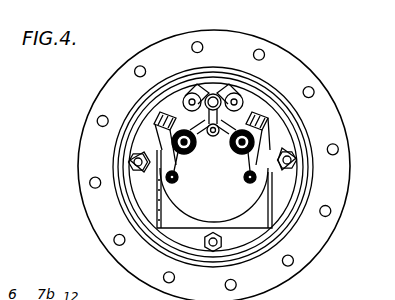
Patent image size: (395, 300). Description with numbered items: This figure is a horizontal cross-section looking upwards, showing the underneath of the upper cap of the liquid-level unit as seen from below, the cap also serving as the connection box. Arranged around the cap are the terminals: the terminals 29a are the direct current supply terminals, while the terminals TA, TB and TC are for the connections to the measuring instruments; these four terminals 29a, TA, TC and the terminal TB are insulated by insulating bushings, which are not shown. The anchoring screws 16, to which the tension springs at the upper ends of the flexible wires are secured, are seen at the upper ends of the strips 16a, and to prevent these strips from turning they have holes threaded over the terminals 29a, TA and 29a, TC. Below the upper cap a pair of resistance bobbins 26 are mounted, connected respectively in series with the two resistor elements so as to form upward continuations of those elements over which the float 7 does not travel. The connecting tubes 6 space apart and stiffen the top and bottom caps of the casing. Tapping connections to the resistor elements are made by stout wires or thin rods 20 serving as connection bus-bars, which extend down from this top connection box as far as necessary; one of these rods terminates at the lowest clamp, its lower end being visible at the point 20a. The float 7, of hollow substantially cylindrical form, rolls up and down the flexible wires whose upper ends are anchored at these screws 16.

The rods 20 is at (132, 65).
The lower end of rod 20a is at (163, 118).
The connecting tubes 6 is at (131, 163).
The float 7 is at (272, 212).
The terminal TB is at (212, 128).
The resistance bobbins 26 is at (190, 90).
The anchoring screw 16 is at (155, 124).
The terminals 29a is at (170, 178).
The strips 16a is at (184, 156).
The terminal TA is at (274, 137).
The terminal TC is at (113, 150).